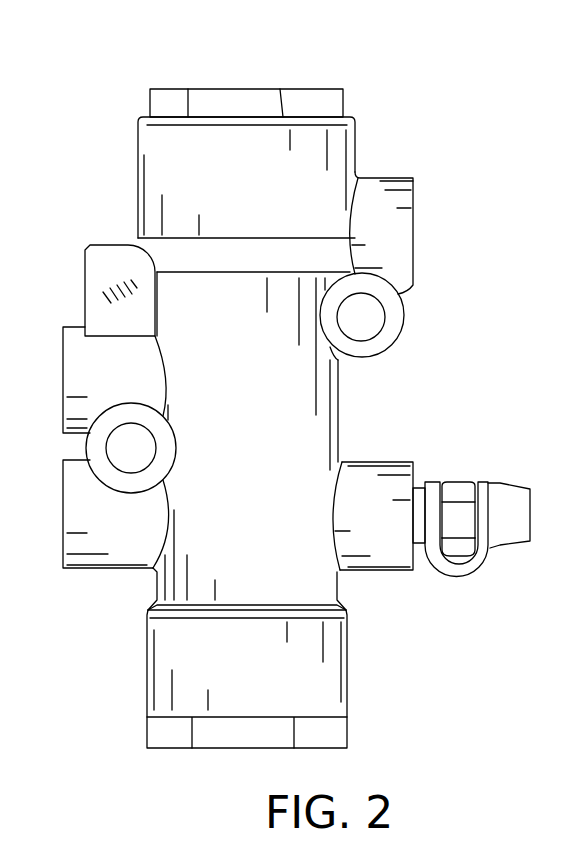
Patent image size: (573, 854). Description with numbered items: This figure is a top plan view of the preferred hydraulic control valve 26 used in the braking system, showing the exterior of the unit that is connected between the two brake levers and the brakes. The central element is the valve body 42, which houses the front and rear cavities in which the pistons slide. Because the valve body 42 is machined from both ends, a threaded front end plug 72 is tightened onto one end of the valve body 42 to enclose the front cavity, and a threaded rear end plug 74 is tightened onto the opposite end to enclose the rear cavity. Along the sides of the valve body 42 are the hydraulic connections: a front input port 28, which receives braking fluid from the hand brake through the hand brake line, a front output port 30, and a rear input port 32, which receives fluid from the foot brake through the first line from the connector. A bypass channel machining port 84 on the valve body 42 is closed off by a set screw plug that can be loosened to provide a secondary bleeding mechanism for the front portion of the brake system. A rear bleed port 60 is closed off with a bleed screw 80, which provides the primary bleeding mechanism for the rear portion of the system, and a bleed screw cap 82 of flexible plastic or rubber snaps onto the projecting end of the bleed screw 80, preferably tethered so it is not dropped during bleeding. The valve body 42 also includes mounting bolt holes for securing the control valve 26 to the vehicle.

The control valve 26 is at (382, 76).
The front end plug 72 is at (232, 88).
The valve body 42 is at (330, 198).
The front input port 28 is at (415, 232).
The bypass channel machining port 84 is at (83, 293).
The front output port 30 is at (63, 357).
The rear input port 32 is at (63, 497).
The rear bleed port 60 is at (420, 474).
The bleed screw 80 is at (460, 492).
The bleed screw cap 82 is at (508, 510).
The rear end plug 74 is at (243, 752).